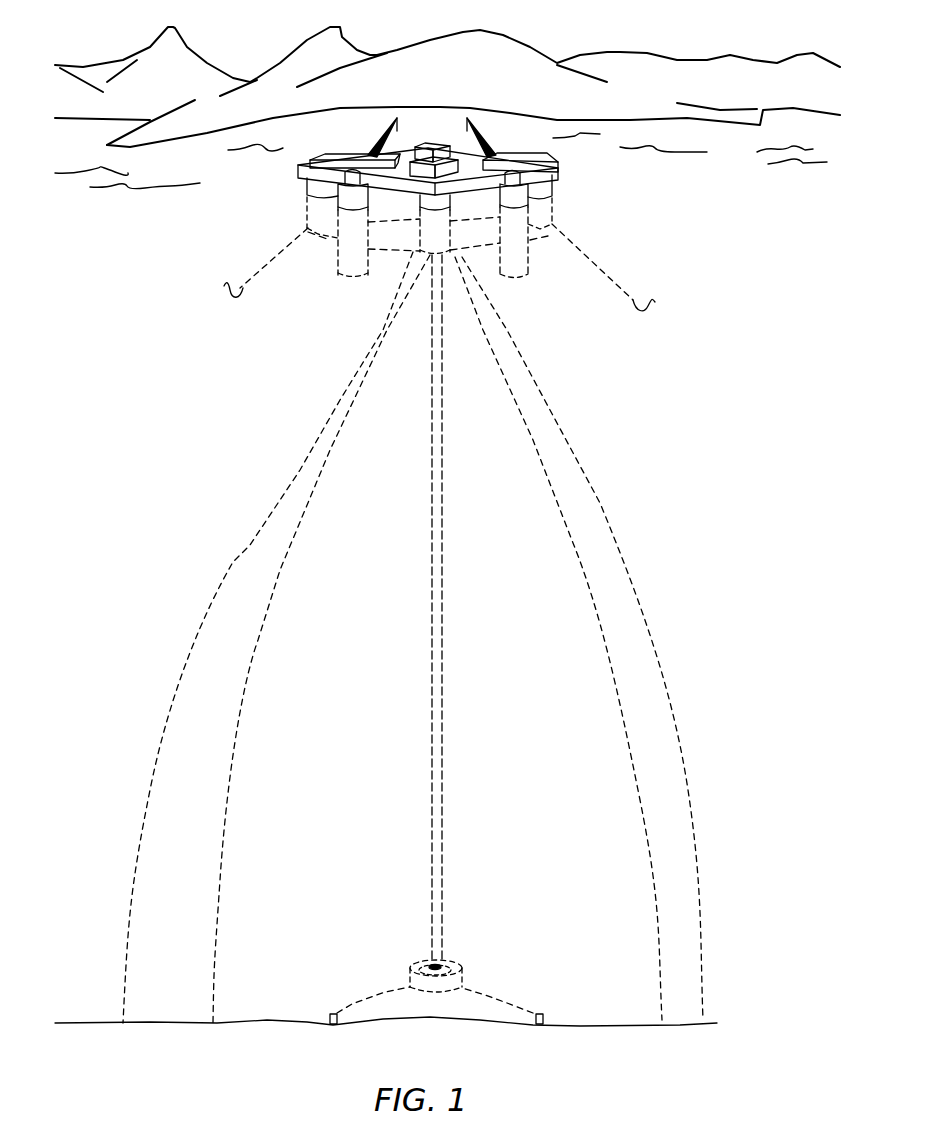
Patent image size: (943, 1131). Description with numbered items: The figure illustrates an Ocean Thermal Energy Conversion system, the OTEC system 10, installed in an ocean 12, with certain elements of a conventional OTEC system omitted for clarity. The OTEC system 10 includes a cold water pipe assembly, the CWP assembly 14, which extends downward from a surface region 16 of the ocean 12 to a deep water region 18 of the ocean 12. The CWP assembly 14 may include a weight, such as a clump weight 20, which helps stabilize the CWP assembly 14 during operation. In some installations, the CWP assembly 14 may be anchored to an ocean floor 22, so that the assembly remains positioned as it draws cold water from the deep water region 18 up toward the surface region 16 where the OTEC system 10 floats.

The OTEC system 10 is at (493, 201).
The ocean 12 is at (183, 316).
The CWP assembly 14 is at (443, 703).
The surface region 16 is at (321, 285).
The deep water region 18 is at (539, 986).
The clump weight 20 is at (460, 978).
The ocean floor 22 is at (596, 1056).